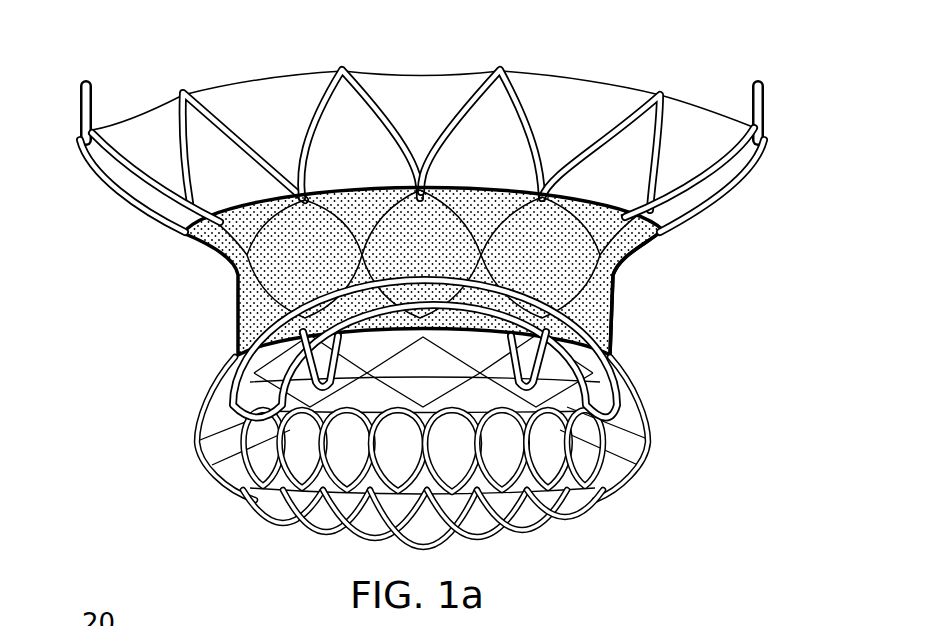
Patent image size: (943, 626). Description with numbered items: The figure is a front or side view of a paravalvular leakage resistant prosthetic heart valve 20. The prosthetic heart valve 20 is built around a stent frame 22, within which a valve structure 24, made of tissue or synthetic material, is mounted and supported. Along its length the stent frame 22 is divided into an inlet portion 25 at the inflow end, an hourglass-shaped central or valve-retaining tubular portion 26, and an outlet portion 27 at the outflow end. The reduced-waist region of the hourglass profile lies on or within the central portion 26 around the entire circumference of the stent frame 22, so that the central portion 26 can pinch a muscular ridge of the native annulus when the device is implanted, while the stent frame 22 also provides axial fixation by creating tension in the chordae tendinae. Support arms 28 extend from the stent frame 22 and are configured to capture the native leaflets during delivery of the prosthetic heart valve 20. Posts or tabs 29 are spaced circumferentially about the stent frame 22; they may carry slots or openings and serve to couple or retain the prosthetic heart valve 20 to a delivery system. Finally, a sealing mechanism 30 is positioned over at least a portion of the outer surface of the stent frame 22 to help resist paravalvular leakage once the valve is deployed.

The prosthetic heart valve 20 is at (653, 32).
The stent frame 22 is at (181, 93).
The valve structure 24 is at (136, 118).
The inlet portion 25 is at (76, 177).
The central portion 26 is at (229, 298).
The outlet portion 27 is at (200, 372).
The support arms 28 is at (590, 374).
The posts or tabs 29 is at (82, 98).
The sealing mechanism 30 is at (610, 281).